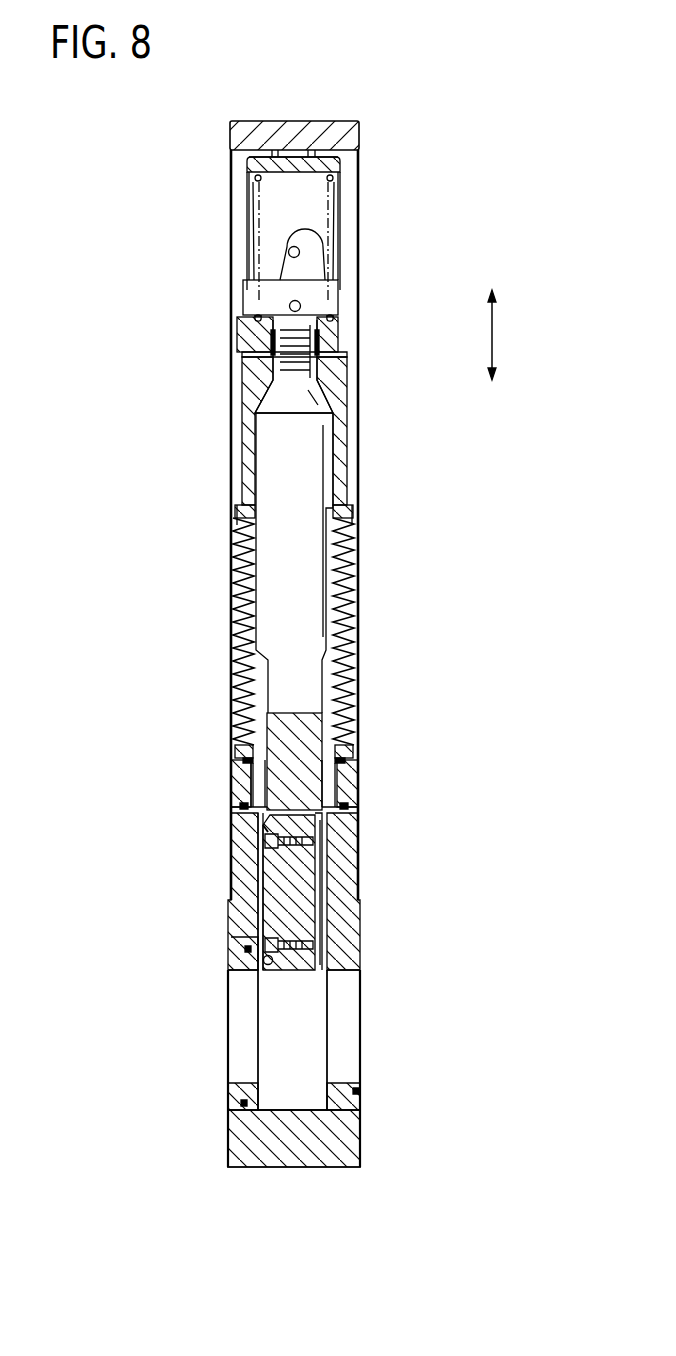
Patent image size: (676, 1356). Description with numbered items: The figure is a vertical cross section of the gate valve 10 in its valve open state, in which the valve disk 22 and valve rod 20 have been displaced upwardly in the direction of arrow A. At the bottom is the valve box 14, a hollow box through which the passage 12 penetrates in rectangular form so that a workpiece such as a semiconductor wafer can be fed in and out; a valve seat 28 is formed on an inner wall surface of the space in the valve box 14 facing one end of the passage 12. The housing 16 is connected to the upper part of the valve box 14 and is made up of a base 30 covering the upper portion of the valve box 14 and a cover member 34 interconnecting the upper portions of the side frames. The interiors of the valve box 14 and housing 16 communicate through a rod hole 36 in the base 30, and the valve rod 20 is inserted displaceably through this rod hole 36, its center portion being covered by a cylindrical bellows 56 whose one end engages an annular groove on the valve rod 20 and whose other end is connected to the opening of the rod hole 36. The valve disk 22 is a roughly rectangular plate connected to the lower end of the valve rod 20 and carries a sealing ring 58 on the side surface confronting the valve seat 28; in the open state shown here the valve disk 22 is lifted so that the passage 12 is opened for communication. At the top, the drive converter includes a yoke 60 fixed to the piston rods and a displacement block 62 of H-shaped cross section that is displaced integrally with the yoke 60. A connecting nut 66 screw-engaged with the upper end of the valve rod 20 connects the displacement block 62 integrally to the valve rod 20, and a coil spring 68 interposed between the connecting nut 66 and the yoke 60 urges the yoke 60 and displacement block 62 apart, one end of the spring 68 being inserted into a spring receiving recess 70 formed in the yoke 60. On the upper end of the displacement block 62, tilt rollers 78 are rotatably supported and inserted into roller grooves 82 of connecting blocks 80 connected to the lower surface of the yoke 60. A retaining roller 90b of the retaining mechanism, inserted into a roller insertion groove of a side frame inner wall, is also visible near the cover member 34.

The gate valve 10 is at (427, 92).
The passage 12 is at (240, 1058).
The valve box 14 is at (309, 1152).
The housing 16 is at (378, 237).
The valve rod 20 is at (268, 597).
The valve disk 22 is at (275, 886).
The valve seat 28 is at (260, 1094).
The base 30 is at (347, 770).
The cover member 34 is at (320, 131).
The rod hole 36 is at (265, 780).
The bellows 56 is at (347, 684).
The sealing ring 58 is at (262, 960).
The yoke 60 is at (335, 172).
The displacement block 62 is at (326, 377).
The connecting nut 66 is at (250, 337).
The spring 68 is at (334, 316).
The spring receiving recess 70 is at (280, 176).
The tilt roller 78 is at (290, 304).
The connecting block 80 is at (275, 215).
The roller groove 82 is at (312, 272).
The retaining roller 90b is at (288, 252).